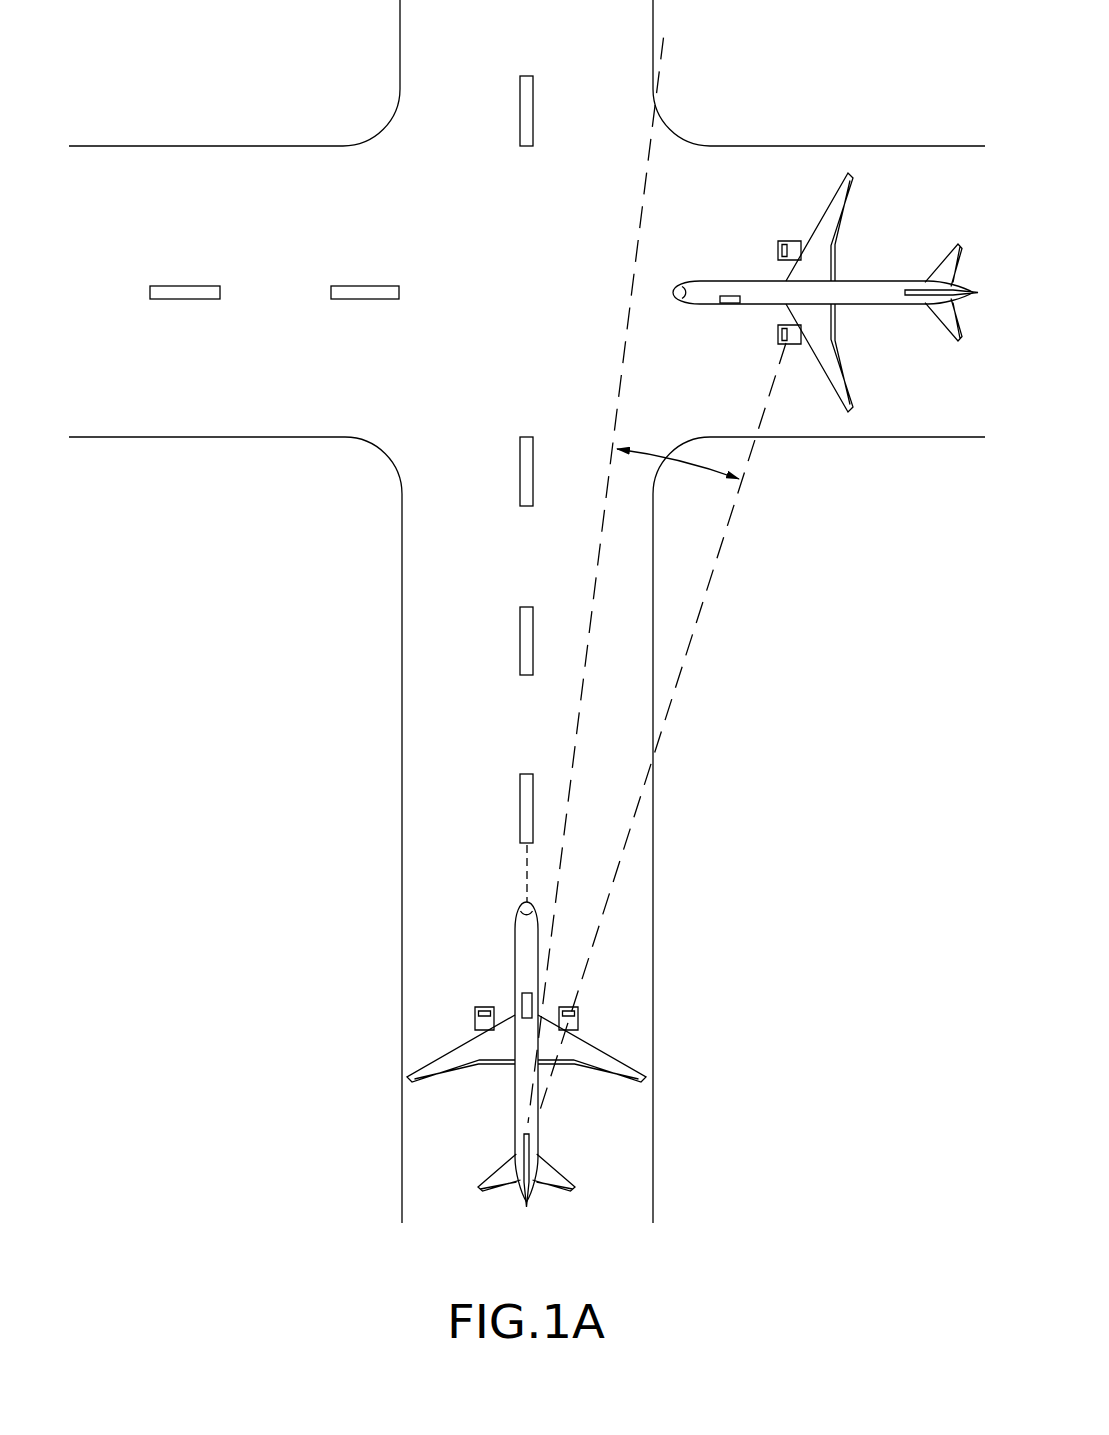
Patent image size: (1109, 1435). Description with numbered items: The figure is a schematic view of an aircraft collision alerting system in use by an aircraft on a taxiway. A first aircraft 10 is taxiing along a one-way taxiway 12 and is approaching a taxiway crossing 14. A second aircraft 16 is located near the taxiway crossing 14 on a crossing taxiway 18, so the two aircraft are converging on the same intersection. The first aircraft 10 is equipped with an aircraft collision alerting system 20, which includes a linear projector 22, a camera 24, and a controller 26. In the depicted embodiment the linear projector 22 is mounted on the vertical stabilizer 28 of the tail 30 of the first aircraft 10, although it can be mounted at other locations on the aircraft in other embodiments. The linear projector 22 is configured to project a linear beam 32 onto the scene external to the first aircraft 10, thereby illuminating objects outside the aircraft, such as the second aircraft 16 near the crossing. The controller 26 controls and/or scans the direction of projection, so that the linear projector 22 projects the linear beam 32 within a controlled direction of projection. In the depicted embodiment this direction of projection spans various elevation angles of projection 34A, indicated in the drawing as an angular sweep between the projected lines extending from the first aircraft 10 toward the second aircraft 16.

The first aircraft 10 is at (496, 1070).
The one-way taxiway 12 is at (486, 687).
The taxiway crossing 14 is at (360, 446).
The second aircraft 16 is at (874, 320).
The taxiway 18 is at (221, 383).
The aircraft collision alerting system 20 is at (596, 1014).
The linear projector 22 is at (530, 1131).
The camera 24 is at (540, 1018).
The controller 26 is at (517, 1003).
The vertical stabilizer 28 is at (547, 1188).
The tail 30 is at (488, 1207).
The linear beam 32 is at (678, 526).
The elevation angles of projection 34A is at (661, 449).